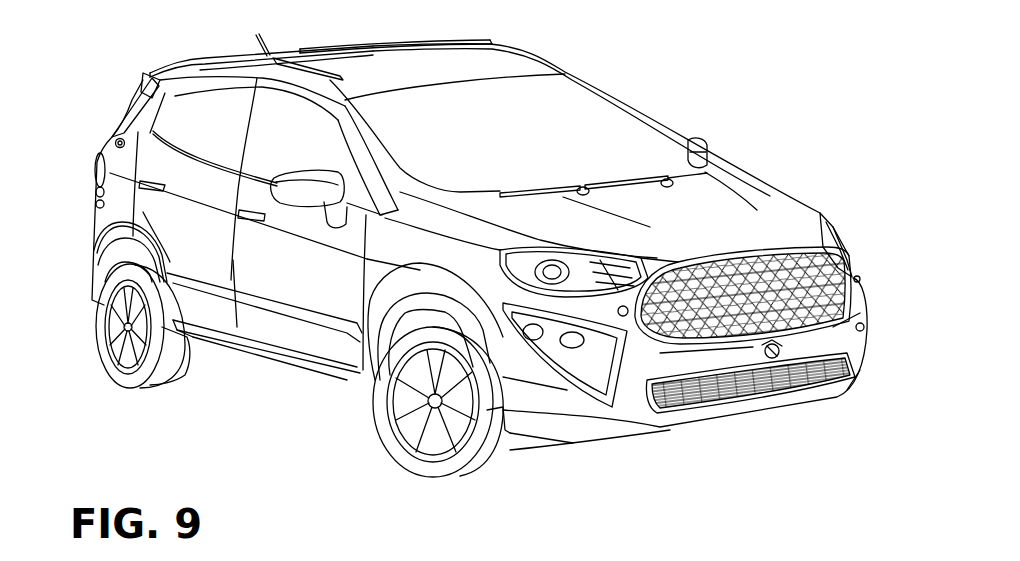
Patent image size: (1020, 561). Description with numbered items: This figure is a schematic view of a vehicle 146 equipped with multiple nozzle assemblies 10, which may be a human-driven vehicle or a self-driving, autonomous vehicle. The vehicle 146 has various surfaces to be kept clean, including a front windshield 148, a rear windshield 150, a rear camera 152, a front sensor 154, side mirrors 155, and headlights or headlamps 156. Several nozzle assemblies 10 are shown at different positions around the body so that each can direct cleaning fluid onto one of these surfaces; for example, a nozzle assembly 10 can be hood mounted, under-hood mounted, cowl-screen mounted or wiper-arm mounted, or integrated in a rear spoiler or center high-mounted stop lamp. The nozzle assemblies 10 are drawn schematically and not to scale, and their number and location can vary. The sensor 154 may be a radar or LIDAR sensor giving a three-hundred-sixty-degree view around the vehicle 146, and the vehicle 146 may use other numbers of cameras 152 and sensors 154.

The nozzle assembly 10 is at (117, 140).
The vehicle 146 is at (479, 255).
The front windshield 148 is at (565, 110).
The rear windshield 150 is at (130, 107).
The camera 152 is at (97, 193).
The sensor 154 is at (770, 358).
The side mirrors 155 is at (300, 207).
The headlights 156 is at (640, 258).